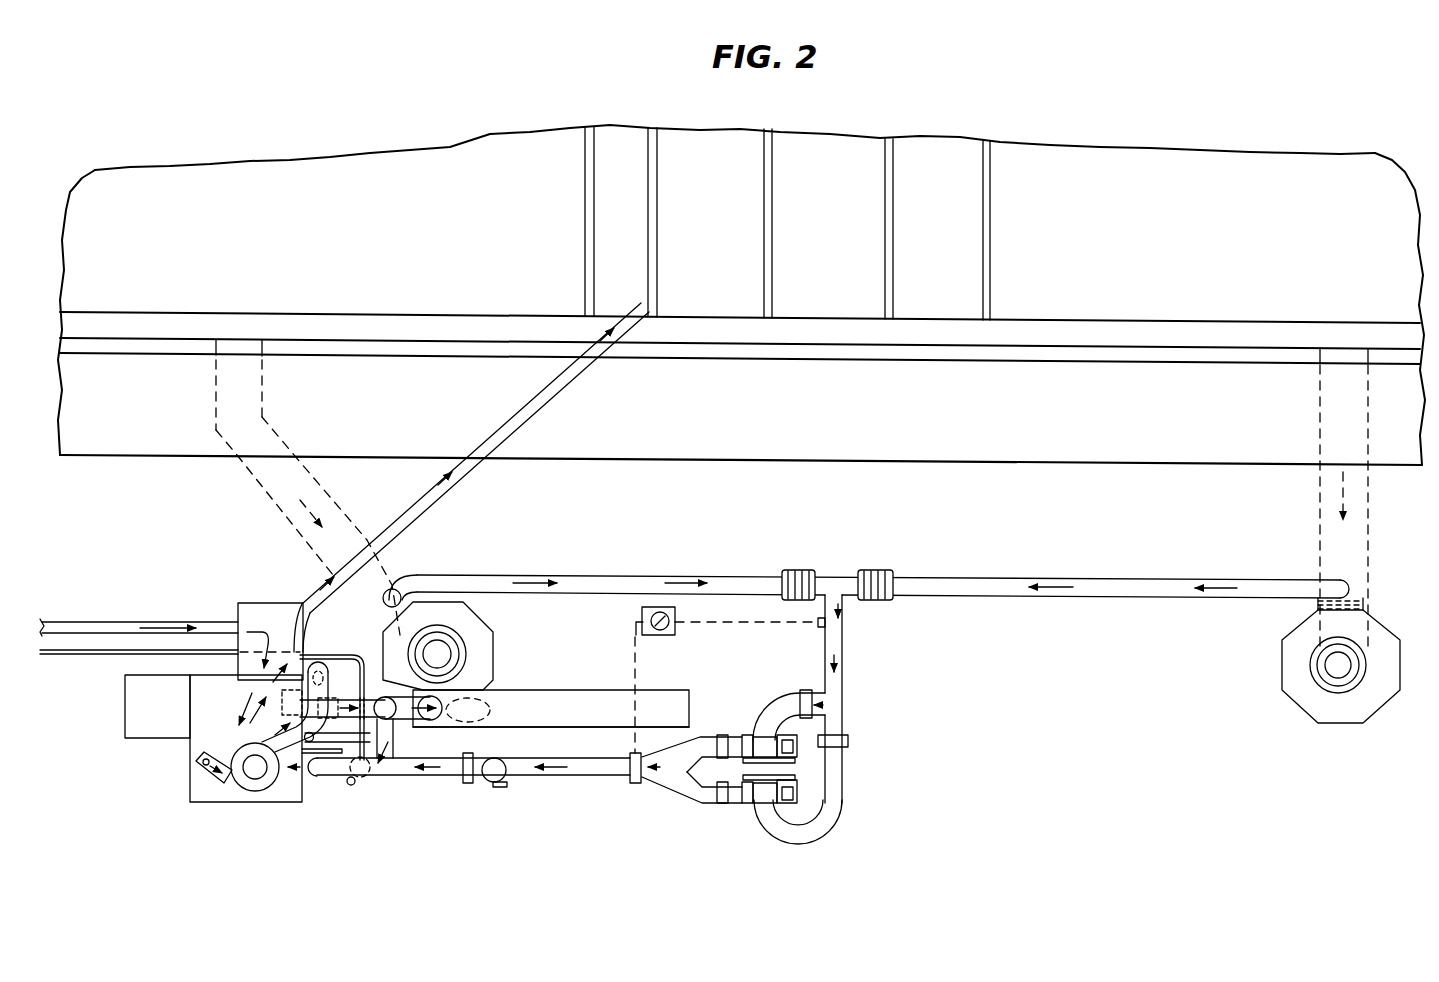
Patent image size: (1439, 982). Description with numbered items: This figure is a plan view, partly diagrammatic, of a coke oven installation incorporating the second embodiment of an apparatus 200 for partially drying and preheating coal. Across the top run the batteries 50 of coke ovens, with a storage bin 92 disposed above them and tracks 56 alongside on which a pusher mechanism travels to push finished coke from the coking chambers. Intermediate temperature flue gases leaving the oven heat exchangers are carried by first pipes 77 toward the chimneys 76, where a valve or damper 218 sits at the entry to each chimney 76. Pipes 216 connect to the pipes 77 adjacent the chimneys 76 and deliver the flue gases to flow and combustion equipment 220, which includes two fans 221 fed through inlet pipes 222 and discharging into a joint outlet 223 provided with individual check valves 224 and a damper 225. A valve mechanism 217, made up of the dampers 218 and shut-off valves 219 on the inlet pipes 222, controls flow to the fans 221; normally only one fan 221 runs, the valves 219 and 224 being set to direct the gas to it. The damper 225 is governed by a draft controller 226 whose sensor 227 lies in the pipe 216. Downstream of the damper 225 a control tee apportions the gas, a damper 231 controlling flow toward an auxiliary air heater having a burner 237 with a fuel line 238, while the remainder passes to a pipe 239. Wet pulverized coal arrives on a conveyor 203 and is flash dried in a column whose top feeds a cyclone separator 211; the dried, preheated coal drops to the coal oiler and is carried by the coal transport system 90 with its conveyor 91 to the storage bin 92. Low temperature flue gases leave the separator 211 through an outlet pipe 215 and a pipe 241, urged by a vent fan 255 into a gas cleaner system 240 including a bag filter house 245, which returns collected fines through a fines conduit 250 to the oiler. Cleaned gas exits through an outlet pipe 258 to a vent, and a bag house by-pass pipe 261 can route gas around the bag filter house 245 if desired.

The batteries of coke ovens 50 is at (288, 176).
The storage bin 92 is at (734, 157).
The tracks 56 is at (668, 360).
The first pipes 77 is at (268, 494).
The conveyor 91 is at (542, 395).
The coal transport system 90 is at (286, 590).
The conveyor 203 is at (88, 621).
The fuel line 238 is at (97, 656).
The outlet pipe 215 is at (235, 740).
The cyclone separator 211 is at (257, 792).
The pipe 241 is at (318, 685).
The vent fan 255 is at (325, 700).
The outlet pipe 258 is at (396, 692).
The fines conduit 250 is at (405, 733).
The bag house by-pass pipe 261 is at (402, 763).
The pipe 239 is at (438, 777).
The burner 237 is at (322, 788).
The damper 231 is at (465, 786).
The flow and combustion equipment 220 is at (392, 815).
The gas cleaner system 240 is at (536, 688).
The bag filter house 245 is at (537, 718).
The draft controller 226 is at (642, 615).
The sensor 227 is at (818, 620).
The pipes 216 is at (608, 575).
The valve mechanism 217 is at (862, 713).
The inlet pipes 222 is at (777, 703).
The shut-off valves 219 is at (804, 696).
The fans 221 is at (745, 734).
The joint outlet 223 is at (680, 790).
The check valves 224 is at (732, 735).
The damper 225 is at (632, 783).
The chimneys 76 is at (494, 648).
The valve or damper 218 is at (1356, 598).
The apparatus 200 is at (107, 809).